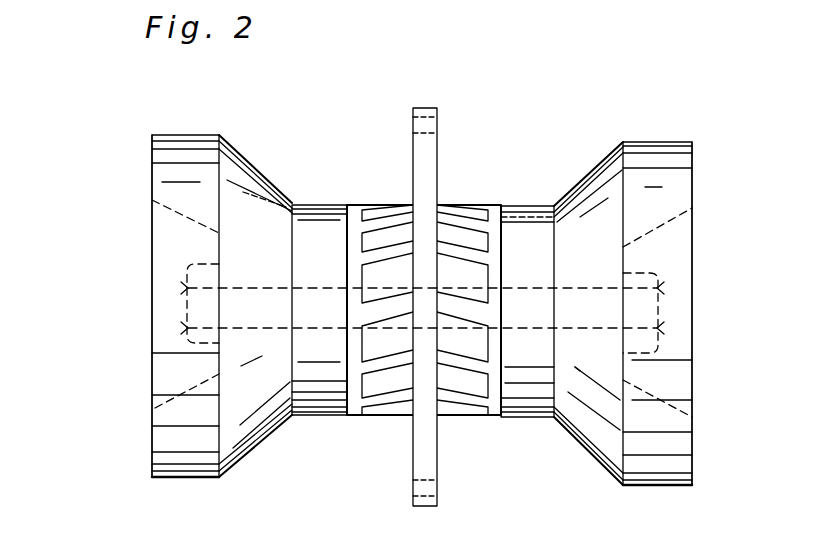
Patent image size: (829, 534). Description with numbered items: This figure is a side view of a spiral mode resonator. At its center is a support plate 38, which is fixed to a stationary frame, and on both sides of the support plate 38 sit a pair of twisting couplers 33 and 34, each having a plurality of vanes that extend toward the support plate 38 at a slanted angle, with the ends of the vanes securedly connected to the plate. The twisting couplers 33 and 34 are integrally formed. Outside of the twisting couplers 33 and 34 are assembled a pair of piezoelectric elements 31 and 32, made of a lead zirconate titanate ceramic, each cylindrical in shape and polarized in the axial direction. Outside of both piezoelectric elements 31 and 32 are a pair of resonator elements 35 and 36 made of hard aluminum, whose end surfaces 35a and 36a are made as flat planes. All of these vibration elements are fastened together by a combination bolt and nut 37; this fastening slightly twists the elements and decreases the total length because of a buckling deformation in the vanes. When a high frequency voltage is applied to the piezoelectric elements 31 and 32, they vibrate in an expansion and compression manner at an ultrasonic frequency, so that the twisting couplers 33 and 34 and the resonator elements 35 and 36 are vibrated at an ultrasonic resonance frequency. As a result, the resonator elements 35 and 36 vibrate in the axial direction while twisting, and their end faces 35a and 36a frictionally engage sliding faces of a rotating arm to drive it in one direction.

The piezoelectric element 31 is at (528, 208).
The piezoelectric element 32 is at (306, 206).
The twisting coupler 33 is at (457, 215).
The twisting coupler 34 is at (372, 215).
The resonator element 35 is at (658, 148).
The end face 35a is at (692, 192).
The resonator element 36 is at (246, 150).
The end face 36a is at (151, 181).
The bolt and nut 37 is at (658, 308).
The support plate 38 is at (438, 120).